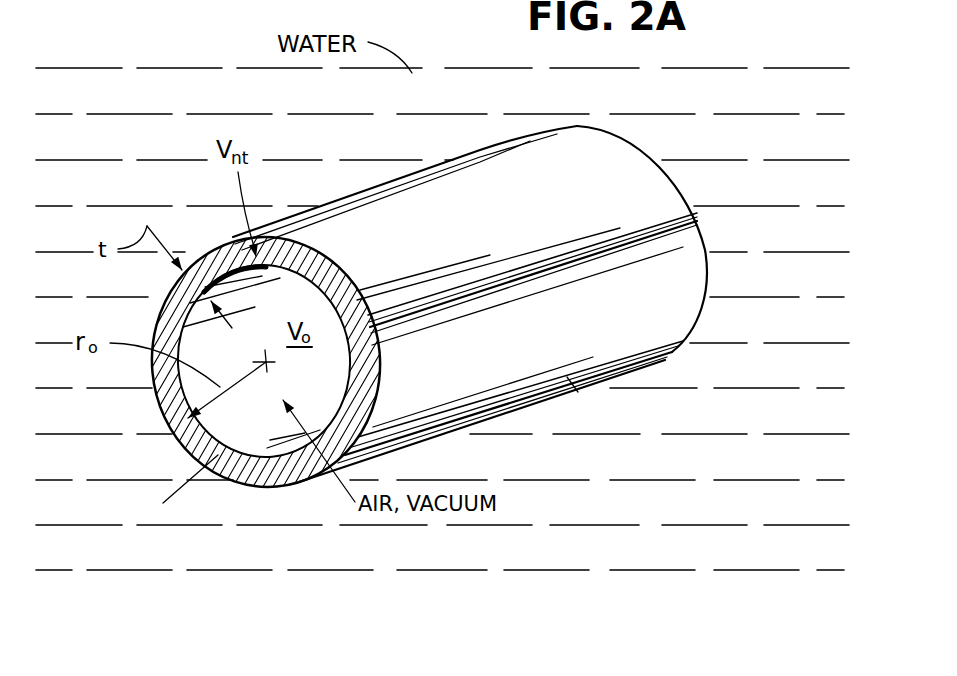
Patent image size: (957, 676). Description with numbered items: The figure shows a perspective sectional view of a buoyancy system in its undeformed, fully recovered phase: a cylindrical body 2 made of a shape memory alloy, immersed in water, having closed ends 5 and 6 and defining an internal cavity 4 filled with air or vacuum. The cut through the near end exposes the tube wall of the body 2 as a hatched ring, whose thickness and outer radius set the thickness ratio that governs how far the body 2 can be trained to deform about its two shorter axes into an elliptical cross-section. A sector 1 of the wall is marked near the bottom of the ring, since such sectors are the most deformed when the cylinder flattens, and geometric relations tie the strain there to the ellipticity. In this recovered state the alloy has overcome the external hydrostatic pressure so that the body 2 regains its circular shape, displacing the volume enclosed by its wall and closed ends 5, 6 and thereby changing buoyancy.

The sector 1 is at (264, 369).
The cylindrical body 2 is at (755, 136).
The internal cavity 4 is at (569, 382).
The closed end 5 is at (180, 485).
The closed end 6 is at (709, 265).